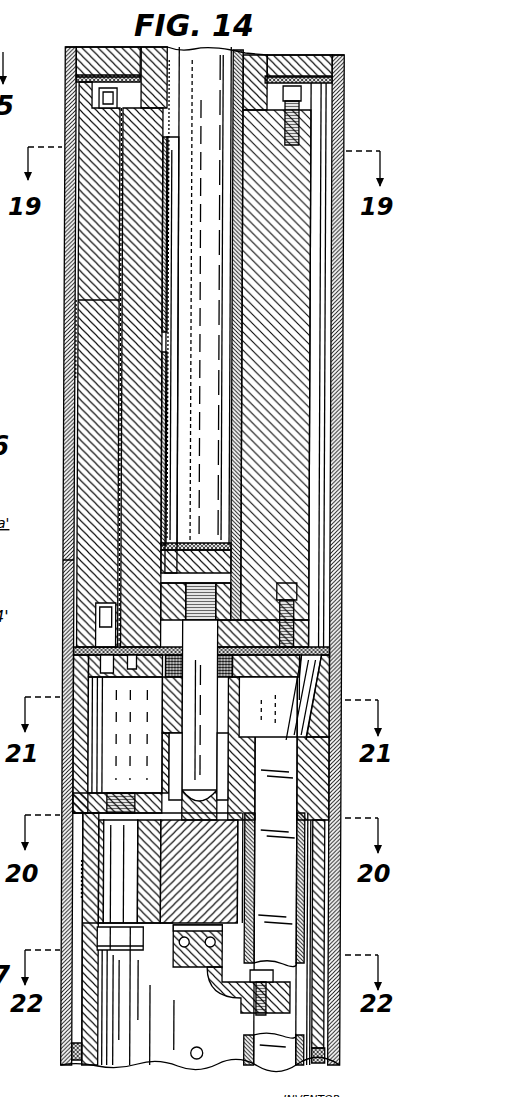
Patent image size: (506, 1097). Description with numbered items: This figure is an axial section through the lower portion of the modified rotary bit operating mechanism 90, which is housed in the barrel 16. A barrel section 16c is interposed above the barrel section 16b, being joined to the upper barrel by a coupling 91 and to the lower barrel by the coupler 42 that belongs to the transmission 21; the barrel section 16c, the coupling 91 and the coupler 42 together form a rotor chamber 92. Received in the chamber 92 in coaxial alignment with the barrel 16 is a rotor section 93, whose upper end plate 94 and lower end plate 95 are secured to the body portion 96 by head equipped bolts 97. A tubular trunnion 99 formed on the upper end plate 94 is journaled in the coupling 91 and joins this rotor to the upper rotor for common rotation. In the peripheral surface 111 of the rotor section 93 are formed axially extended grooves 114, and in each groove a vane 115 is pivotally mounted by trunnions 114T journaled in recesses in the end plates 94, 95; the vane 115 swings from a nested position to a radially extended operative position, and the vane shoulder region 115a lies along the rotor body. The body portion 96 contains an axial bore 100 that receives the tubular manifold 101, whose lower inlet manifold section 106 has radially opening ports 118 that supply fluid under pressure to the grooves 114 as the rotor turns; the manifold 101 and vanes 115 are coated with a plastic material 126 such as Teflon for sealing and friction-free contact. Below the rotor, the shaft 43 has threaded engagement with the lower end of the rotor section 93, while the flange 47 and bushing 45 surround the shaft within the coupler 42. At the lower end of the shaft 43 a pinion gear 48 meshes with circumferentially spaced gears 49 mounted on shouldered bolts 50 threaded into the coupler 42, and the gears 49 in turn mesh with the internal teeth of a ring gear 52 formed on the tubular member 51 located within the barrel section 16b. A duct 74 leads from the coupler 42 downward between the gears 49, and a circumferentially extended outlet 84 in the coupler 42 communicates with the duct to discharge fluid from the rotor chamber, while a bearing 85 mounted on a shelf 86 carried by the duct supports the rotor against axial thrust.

The barrel 16 is at (61, 589).
The tubular trunnion 99 is at (257, 55).
The coupling 91 is at (311, 62).
The upper end plate 94 is at (310, 100).
The head equipped bolts 97 is at (294, 127).
The vanes 115 is at (93, 445).
The shoulder of body member 115a is at (85, 301).
The grooves 114 is at (120, 477).
The trunnions 114T is at (55, 640).
The axial bore 100 is at (165, 428).
The lower radially opening ports 118 is at (174, 250).
The lower inlet manifold section 106 is at (197, 333).
The plastic coating material 126 is at (233, 296).
The tubular manifold 101 is at (245, 293).
The body portion 96 is at (294, 497).
The rotor section 93 is at (315, 372).
The rotor chamber 92 is at (322, 450).
The peripheral surface 111 is at (311, 533).
The rotary bit operating mechanism 90 is at (349, 414).
The barrel section 16c is at (62, 570).
The lower end plate 95 is at (311, 636).
The coupler 42 is at (71, 774).
The flange 47 is at (165, 663).
The shaft 43 is at (190, 697).
The bushing 45 is at (176, 758).
The circumferentially extended outlet 84 is at (311, 675).
The transmission 21 is at (73, 908).
The gears 49 is at (91, 920).
The pinion gear 48 is at (245, 890).
The duct 74 is at (285, 945).
The ring gear 52 is at (313, 913).
The shouldered bolts 50 is at (120, 952).
The bearing 85 is at (176, 949).
The shelf 86 is at (190, 972).
The tubular member 51 is at (140, 1052).
The barrel section 16b is at (62, 1048).